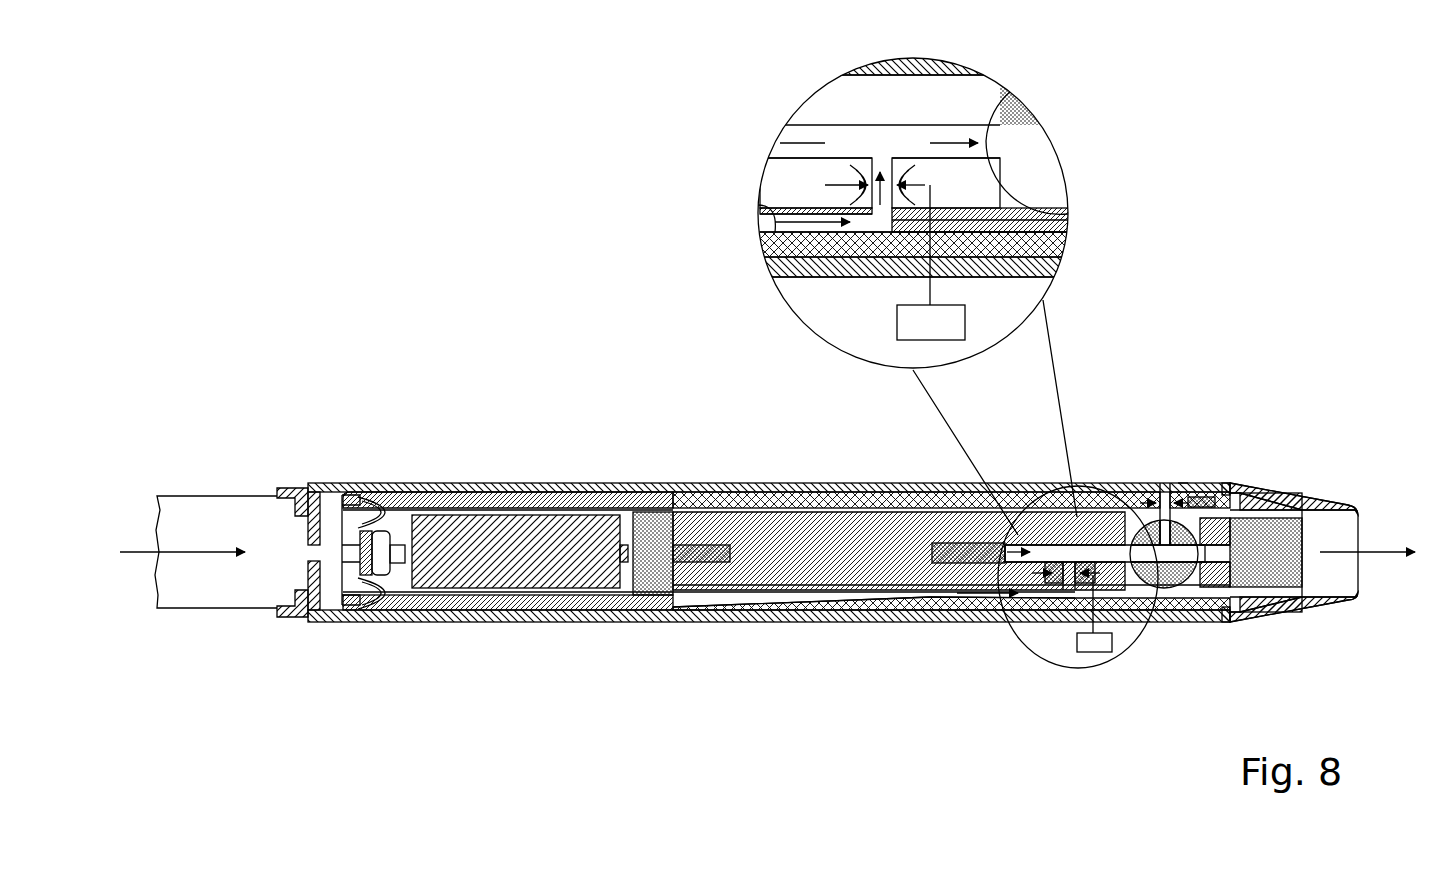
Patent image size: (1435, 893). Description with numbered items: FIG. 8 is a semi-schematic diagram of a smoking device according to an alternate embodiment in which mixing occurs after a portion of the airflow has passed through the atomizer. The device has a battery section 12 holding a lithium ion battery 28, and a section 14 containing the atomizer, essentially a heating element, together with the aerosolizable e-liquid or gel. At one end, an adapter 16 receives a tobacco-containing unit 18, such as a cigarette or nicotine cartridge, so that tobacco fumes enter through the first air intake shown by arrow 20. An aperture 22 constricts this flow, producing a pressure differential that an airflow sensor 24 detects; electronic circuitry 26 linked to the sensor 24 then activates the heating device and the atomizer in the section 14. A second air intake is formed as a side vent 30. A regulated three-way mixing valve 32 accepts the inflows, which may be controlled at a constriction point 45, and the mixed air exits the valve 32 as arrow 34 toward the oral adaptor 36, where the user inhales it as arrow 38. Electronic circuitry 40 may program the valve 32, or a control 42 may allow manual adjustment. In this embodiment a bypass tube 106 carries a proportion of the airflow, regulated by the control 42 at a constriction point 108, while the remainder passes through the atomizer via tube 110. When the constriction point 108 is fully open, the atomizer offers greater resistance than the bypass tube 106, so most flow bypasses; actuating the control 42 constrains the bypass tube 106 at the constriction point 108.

The battery section 12 is at (520, 606).
The section 14 is at (940, 530).
The adapter 16 is at (292, 486).
The tobacco-containing unit 18 is at (215, 612).
The first air intake 20 is at (212, 530).
The aperture 22 is at (312, 556).
The airflow sensor 24 is at (420, 505).
The electronic circuitry 26 is at (398, 600).
The lithium ion battery 28 is at (520, 530).
The side vent 30 is at (1164, 483).
The three-way mixing valve 32 is at (1162, 590).
The air exiting the valve 34 is at (1198, 590).
The oral adaptor 36 is at (1365, 545).
The inhalation flow 38 is at (1362, 575).
The electronic circuitry 40 is at (1212, 490).
The control 42 is at (1092, 652).
The constriction point 45 is at (1180, 483).
The bypass tube 106 is at (915, 600).
The constriction point 108 is at (1052, 583).
The tube 110 is at (1040, 525).